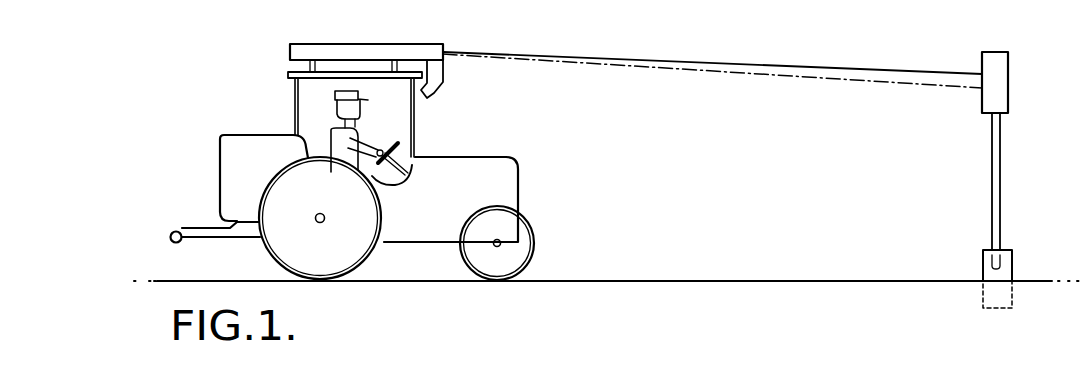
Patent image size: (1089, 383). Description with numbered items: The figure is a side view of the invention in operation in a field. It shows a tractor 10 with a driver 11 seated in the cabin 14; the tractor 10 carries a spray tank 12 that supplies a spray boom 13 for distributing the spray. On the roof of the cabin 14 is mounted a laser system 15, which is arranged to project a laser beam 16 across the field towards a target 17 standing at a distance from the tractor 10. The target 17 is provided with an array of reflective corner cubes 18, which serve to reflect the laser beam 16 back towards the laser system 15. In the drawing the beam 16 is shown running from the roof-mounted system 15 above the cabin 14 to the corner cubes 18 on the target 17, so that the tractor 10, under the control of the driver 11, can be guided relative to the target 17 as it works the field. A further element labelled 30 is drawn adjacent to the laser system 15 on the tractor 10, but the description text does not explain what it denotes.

The tractor 10 is at (508, 193).
The driver 11 is at (335, 111).
The spray tank 12 is at (255, 135).
The spray boom 13 is at (172, 232).
The cabin 14 is at (416, 126).
The laser system 15 is at (389, 44).
The laser beam 16 is at (693, 69).
The target 17 is at (1000, 182).
The array of reflective corner cubes 18 is at (1008, 88).
The receiver bracket 30 is at (437, 97).